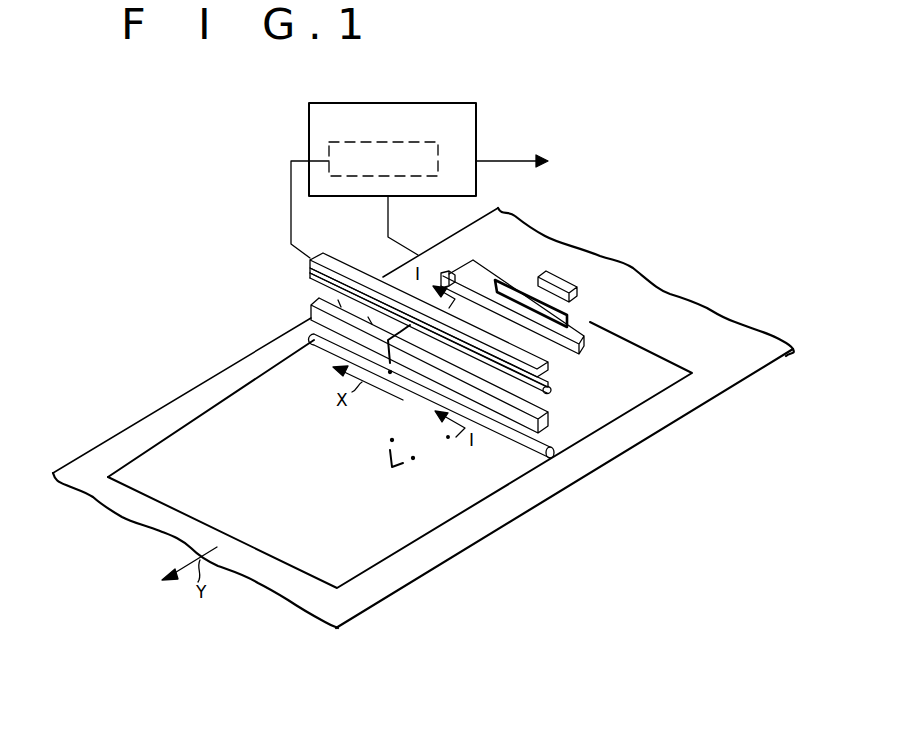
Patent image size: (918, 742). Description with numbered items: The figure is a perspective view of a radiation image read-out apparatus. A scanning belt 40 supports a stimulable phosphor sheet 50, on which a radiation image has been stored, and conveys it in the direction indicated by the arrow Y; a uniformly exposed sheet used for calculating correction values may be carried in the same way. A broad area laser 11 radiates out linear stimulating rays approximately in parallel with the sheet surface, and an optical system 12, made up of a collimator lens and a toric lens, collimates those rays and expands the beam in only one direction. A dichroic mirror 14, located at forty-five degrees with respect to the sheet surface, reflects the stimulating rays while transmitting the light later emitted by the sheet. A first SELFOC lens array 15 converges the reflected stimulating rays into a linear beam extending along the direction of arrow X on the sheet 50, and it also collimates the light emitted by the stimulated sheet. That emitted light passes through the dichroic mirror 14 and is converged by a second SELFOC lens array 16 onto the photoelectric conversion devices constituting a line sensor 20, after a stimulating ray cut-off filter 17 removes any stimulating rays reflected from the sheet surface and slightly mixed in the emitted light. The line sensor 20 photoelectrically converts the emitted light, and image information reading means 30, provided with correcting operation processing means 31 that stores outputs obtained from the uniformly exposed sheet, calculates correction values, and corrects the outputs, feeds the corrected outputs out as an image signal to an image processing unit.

The broad area laser 11 is at (541, 275).
The optical system 12 is at (592, 336).
The dichroic mirror 14 is at (317, 300).
The first SELFOC lens array 15 is at (311, 336).
The second SELFOC lens array 16 is at (551, 391).
The stimulating ray cut-off filter 17 is at (550, 383).
The line sensor 20 is at (332, 256).
The image information reading means 30 is at (478, 145).
The correcting operation processing means 31 is at (393, 142).
The scanning belt 40 is at (710, 318).
The stimulable phosphor sheet 50 is at (420, 538).